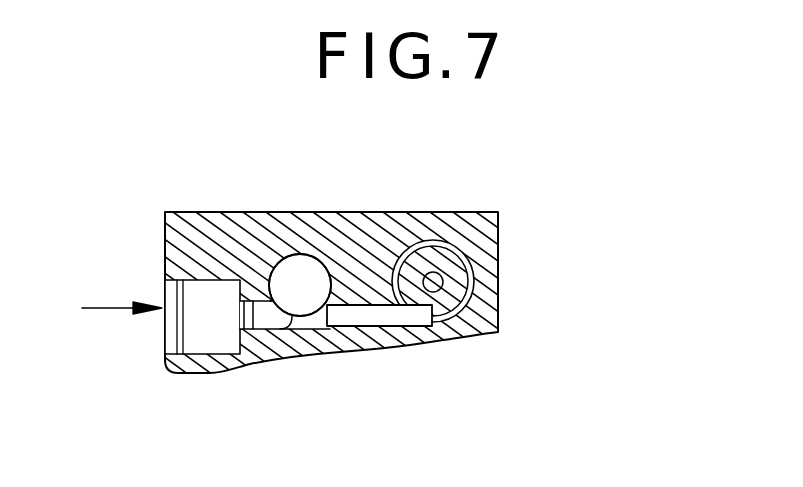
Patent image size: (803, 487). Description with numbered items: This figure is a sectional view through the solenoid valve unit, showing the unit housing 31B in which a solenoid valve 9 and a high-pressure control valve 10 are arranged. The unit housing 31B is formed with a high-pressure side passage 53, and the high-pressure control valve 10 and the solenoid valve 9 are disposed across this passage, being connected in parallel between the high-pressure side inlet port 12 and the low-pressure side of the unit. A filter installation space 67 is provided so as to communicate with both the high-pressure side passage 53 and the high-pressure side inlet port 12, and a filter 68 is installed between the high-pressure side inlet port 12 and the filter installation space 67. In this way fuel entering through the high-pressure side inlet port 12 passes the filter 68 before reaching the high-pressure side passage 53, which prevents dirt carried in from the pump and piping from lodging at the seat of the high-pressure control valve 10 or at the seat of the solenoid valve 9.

The solenoid valve 9 is at (295, 248).
The high-pressure control valve 10 is at (432, 272).
The high-pressure side inlet port 12 is at (187, 320).
The unit housing 31B is at (490, 247).
The high-pressure side passage 53 is at (412, 326).
The filter installation space 67 is at (305, 296).
The filter 68 is at (270, 322).